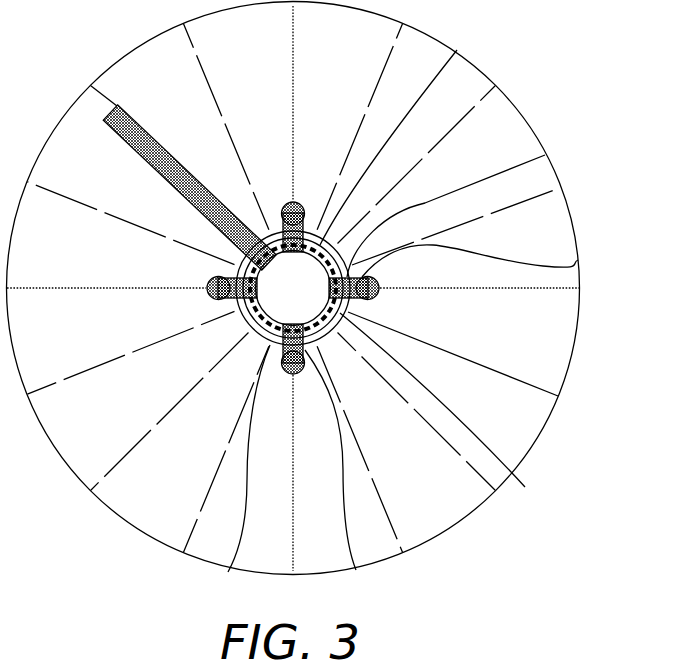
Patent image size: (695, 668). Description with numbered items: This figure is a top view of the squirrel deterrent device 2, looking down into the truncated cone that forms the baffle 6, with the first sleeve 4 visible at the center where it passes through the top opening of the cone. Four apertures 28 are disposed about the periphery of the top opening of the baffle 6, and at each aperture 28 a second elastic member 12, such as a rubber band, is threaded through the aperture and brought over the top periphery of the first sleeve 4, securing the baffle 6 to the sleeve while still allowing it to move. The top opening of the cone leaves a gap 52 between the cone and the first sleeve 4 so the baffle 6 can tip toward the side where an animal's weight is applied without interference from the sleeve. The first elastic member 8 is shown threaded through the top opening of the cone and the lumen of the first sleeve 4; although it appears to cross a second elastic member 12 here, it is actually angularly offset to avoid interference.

The squirrel deterrent device 2 is at (329, 306).
The first sleeve 4 is at (449, 410).
The baffle 6 is at (482, 68).
The first elastic member 8 is at (128, 110).
The second elastic member 12 is at (545, 155).
The aperture 28 is at (578, 260).
The gap 52 is at (467, 38).